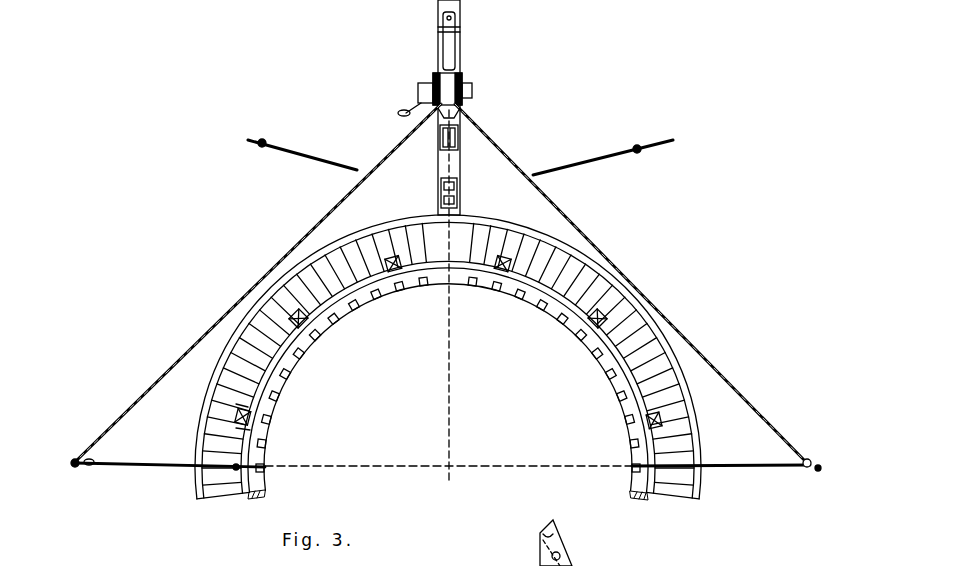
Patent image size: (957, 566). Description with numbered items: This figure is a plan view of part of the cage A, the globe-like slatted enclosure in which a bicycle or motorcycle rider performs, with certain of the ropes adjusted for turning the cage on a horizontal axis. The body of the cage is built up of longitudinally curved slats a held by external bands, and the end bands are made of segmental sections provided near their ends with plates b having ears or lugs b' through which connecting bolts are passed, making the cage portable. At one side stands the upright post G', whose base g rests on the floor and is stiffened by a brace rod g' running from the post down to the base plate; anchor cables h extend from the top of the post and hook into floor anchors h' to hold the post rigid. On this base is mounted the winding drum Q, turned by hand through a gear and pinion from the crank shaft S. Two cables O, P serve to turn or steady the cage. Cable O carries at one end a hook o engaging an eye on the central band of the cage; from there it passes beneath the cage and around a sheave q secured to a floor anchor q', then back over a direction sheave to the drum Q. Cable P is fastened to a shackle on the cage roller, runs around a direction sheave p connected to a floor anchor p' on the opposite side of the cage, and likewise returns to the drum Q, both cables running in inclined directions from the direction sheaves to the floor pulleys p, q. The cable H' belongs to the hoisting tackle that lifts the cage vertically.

The cable O is at (616, 275).
The slats a is at (658, 367).
The cage A is at (600, 357).
The plates b is at (448, 342).
The ears or lugs b' is at (210, 404).
The cable H' is at (472, 296).
The brace rod g' is at (475, 107).
The winding drum Q is at (452, 82).
The crank shaft S is at (426, 85).
The base g is at (479, 132).
The post G' is at (471, 193).
The cable P is at (250, 290).
The sheave q is at (633, 308).
The floor anchor q' is at (808, 490).
The floor anchor p' is at (79, 488).
The direction sheave p is at (99, 486).
The hook o is at (236, 472).
The anchor cables h is at (460, 142).
The floor anchor h' is at (468, 121).